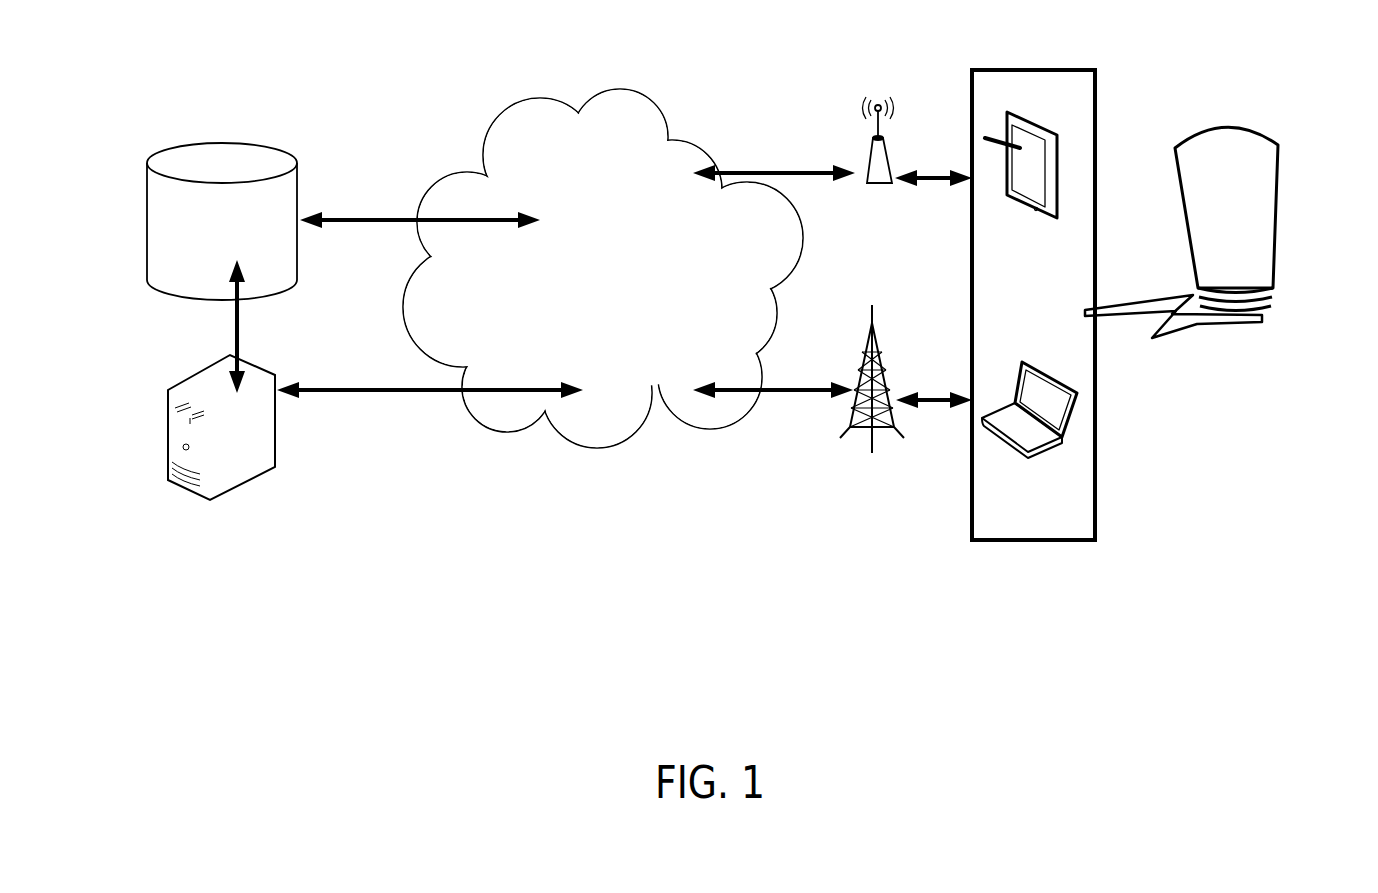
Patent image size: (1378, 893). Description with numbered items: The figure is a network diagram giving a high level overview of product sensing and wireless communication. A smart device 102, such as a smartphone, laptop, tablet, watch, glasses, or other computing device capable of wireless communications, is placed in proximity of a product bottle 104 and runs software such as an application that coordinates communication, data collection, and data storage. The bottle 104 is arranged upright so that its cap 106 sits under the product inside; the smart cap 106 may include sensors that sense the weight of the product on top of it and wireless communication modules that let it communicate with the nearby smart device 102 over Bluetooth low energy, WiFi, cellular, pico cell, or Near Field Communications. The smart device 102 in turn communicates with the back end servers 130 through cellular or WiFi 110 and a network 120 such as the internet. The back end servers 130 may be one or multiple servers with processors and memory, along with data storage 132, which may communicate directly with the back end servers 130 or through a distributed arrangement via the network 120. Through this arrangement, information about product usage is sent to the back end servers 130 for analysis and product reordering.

The smart device 102 is at (1013, 70).
The product bottle 104 is at (1277, 125).
The cap 106 is at (1253, 323).
The WiFi 110 is at (887, 185).
The network 120 is at (663, 112).
The back end servers 130 is at (210, 500).
The data storage 132 is at (152, 282).